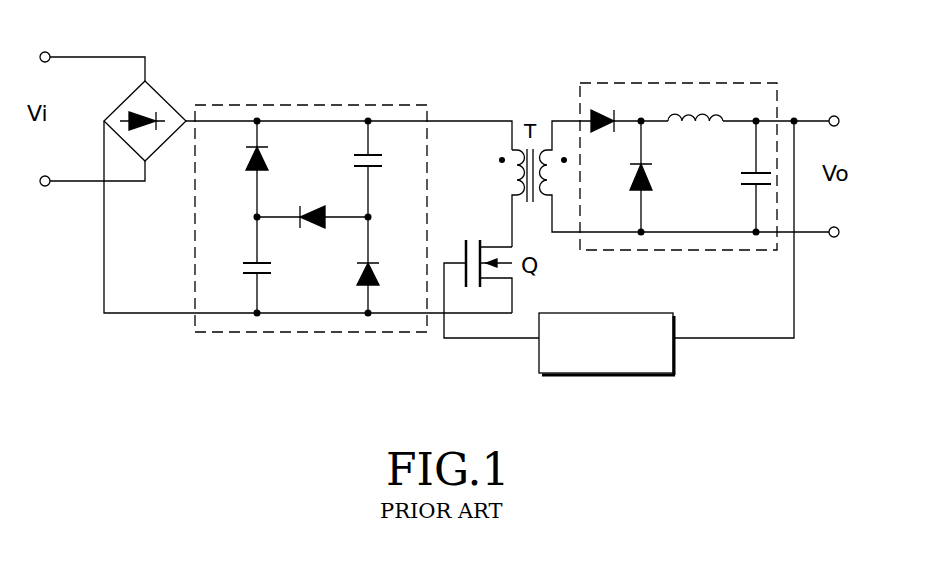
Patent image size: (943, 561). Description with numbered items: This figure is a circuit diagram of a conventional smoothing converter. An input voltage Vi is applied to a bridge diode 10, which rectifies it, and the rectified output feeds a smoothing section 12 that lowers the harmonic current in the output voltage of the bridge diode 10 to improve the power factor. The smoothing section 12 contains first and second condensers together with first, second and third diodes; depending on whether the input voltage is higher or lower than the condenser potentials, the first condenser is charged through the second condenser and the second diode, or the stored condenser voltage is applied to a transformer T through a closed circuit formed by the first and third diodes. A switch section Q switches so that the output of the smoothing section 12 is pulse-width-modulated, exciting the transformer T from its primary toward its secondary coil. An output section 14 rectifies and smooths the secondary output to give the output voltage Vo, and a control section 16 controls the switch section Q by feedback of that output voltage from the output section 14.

The bridge diode 10 is at (160, 96).
The smoothing section 12 is at (299, 333).
The output section 14 is at (667, 83).
The control section 16 is at (613, 374).